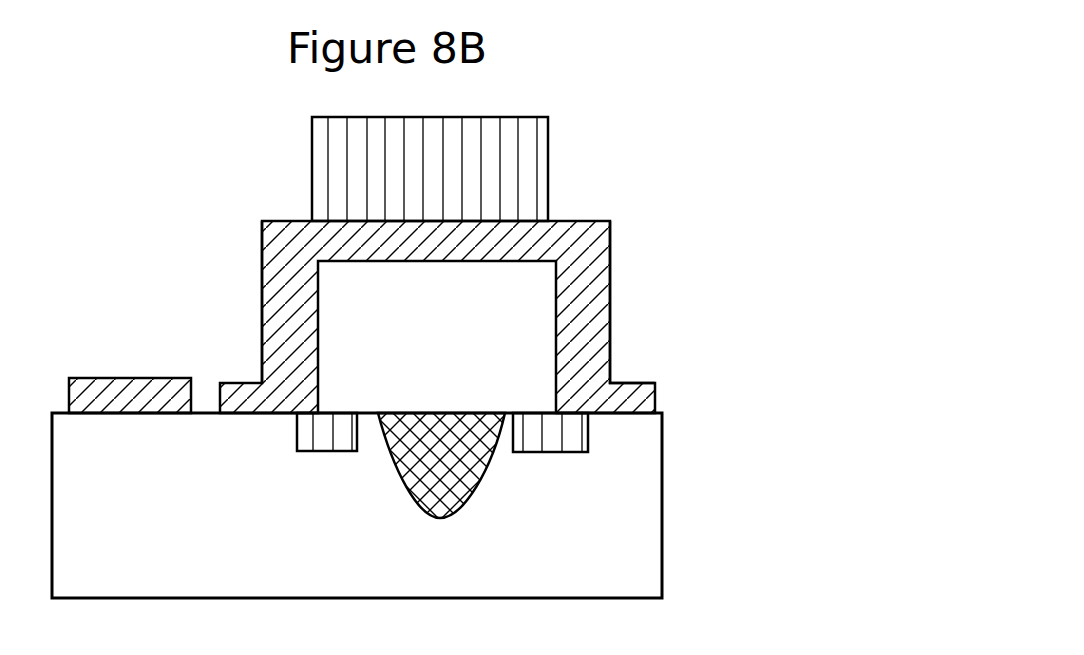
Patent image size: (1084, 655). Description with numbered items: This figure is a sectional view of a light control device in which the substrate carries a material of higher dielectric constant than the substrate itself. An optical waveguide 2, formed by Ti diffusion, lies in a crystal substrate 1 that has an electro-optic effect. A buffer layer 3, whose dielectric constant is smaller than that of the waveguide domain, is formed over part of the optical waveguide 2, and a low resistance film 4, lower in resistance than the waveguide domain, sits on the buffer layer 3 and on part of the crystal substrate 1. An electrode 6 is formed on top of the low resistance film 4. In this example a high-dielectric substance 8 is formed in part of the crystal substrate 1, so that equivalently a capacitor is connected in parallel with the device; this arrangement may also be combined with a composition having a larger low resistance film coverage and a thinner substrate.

The crystal substrate 1 is at (662, 485).
The optical waveguide 2 is at (472, 499).
The buffer layer 3 is at (547, 256).
The low resistance film 4 is at (612, 267).
The electrode 6 is at (548, 166).
The high-dielectric substance 8 is at (330, 413).